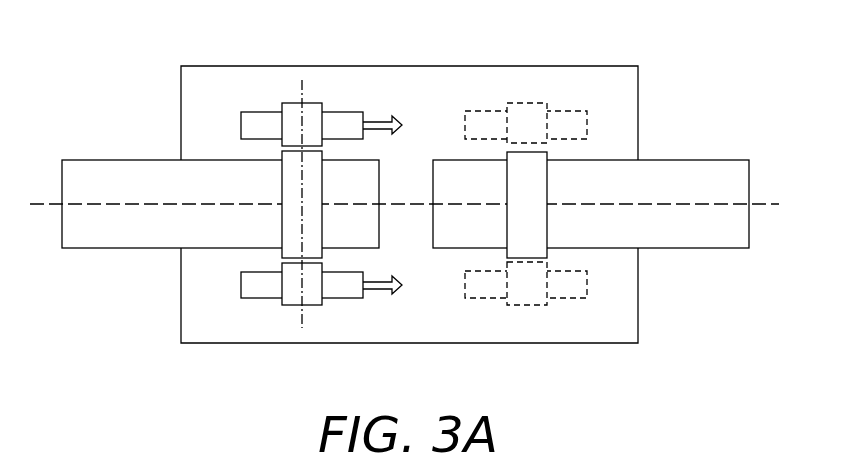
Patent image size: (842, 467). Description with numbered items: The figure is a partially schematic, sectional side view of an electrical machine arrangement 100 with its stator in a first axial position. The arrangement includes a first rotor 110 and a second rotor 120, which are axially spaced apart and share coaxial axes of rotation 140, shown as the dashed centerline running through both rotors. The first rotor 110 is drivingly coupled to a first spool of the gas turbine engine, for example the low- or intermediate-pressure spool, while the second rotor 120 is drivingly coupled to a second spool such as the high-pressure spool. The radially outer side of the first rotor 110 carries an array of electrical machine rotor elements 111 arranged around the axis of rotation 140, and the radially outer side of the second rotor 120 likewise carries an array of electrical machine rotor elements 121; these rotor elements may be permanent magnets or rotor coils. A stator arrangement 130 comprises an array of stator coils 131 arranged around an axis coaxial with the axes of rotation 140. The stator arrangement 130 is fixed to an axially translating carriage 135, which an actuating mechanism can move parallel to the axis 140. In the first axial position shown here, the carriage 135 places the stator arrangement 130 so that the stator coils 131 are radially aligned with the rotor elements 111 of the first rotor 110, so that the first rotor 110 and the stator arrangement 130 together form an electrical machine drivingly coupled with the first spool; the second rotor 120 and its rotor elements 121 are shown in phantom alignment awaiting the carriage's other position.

The electrical machine arrangement 100 is at (167, 27).
The first rotor 110 is at (100, 160).
The electrical machine rotor elements 111 is at (282, 187).
The second rotor 120 is at (702, 160).
The electrical machine rotor elements 121 is at (547, 228).
The stator arrangement 130 is at (318, 322).
The stator coils 131 is at (312, 103).
The axially translating carriage 135 is at (258, 112).
The axis of rotation 140 is at (40, 206).